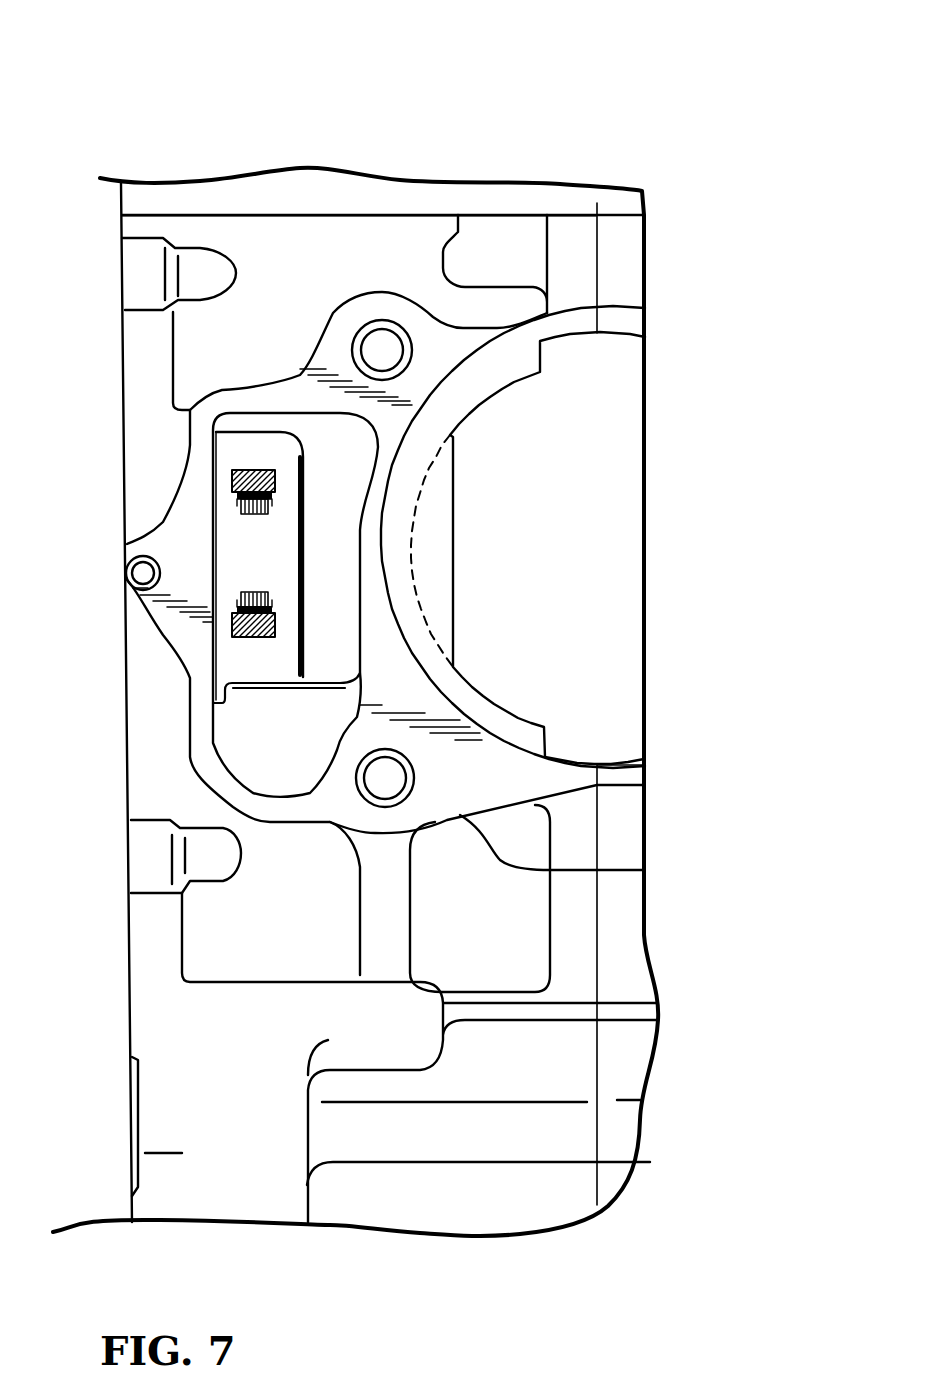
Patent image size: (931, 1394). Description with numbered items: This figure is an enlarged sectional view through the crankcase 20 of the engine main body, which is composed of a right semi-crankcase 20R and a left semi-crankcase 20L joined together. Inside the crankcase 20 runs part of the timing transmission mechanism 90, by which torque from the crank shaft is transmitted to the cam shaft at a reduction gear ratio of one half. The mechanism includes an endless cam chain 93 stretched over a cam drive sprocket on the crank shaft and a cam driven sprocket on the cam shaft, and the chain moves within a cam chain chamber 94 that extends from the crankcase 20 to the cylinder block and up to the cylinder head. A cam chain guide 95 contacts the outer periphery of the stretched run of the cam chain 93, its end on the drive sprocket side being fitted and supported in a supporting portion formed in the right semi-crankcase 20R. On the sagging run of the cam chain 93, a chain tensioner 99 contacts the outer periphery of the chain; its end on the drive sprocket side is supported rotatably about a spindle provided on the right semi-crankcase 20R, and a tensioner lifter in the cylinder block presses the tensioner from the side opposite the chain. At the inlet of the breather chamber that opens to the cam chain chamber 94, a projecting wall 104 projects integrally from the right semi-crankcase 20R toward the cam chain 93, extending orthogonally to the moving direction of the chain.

The crankcase 20 is at (585, 70).
The right semi-crankcase 20R is at (442, 203).
The left semi-crankcase 20L is at (600, 205).
The timing transmission mechanism 90 is at (277, 508).
The cam chain 93 is at (237, 515).
The cam chain chamber 94 is at (270, 569).
The cam chain guide 95 is at (233, 640).
The chain tensioner 99 is at (232, 470).
The projecting wall 104 is at (290, 642).